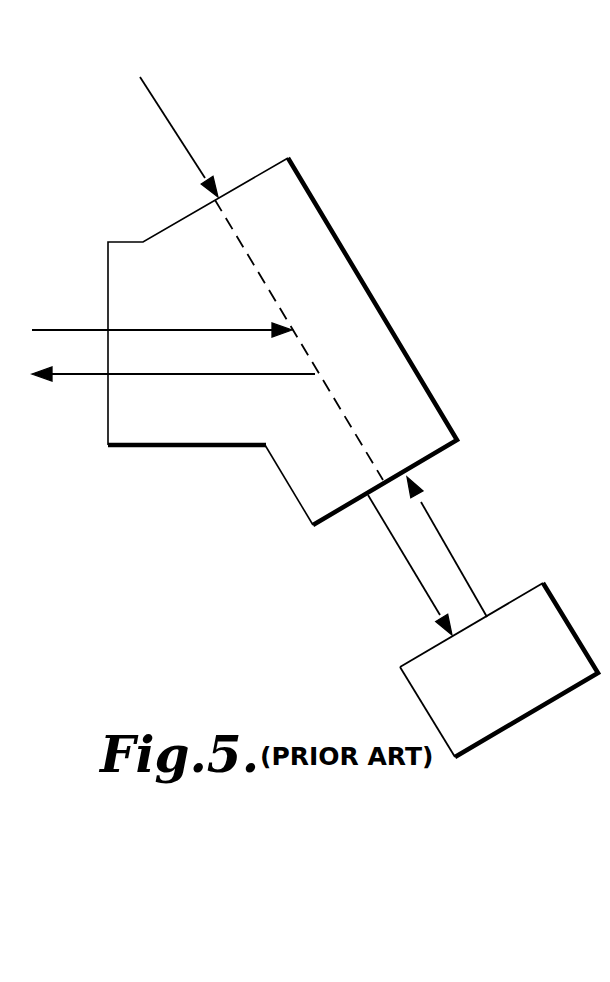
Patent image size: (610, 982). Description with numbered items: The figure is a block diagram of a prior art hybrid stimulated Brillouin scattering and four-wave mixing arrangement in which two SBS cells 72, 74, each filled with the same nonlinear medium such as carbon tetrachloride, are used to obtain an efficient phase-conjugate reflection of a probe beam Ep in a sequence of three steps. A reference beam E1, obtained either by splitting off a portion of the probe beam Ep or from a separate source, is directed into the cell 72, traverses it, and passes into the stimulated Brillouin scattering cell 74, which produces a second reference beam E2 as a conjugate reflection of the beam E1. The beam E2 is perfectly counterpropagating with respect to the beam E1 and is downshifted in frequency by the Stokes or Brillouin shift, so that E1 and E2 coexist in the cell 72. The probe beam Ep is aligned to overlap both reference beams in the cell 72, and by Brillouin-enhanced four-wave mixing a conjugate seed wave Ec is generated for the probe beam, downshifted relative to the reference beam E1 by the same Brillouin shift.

The SBS cell 72 is at (352, 263).
The SBS cell 74 is at (411, 689).
The reference beam E1 is at (400, 553).
The second reference beam E2 is at (435, 527).
The probe beam Ep is at (60, 330).
The conjugate seed wave Ec is at (72, 374).